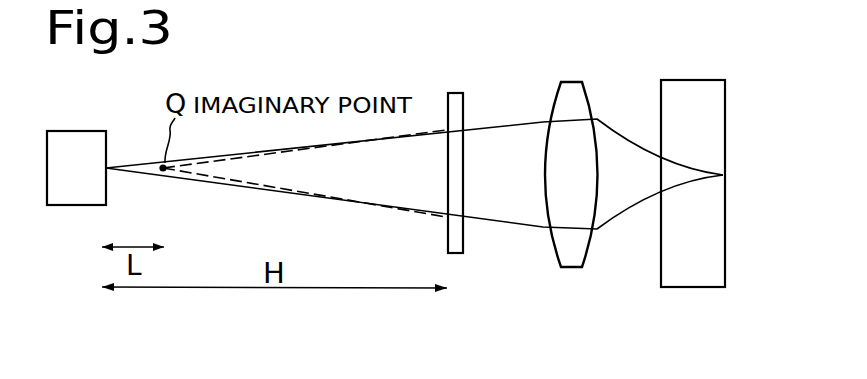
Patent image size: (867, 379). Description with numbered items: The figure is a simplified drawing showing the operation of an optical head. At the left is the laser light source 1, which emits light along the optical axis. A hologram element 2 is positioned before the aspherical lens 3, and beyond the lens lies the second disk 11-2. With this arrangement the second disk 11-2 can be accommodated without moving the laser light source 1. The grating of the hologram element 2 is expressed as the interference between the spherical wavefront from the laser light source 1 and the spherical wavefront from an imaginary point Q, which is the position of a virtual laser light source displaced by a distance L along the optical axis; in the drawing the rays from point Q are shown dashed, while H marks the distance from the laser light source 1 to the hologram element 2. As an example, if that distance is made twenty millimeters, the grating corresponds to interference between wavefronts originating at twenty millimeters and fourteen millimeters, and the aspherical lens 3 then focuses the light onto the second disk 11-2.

The laser light source 1 is at (68, 197).
The hologram element 2 is at (455, 254).
The aspherical lens 3 is at (568, 262).
The second disk 11-2 is at (692, 287).